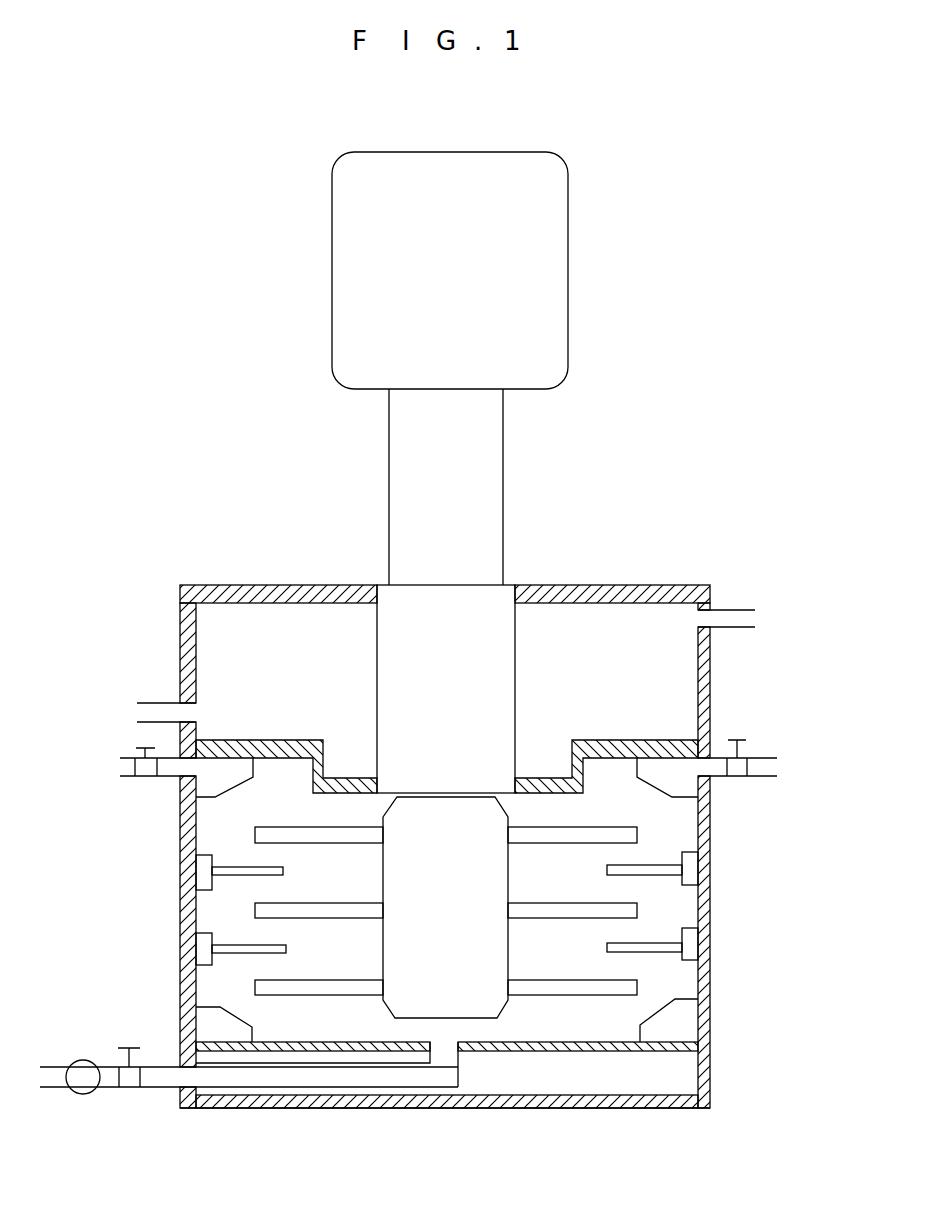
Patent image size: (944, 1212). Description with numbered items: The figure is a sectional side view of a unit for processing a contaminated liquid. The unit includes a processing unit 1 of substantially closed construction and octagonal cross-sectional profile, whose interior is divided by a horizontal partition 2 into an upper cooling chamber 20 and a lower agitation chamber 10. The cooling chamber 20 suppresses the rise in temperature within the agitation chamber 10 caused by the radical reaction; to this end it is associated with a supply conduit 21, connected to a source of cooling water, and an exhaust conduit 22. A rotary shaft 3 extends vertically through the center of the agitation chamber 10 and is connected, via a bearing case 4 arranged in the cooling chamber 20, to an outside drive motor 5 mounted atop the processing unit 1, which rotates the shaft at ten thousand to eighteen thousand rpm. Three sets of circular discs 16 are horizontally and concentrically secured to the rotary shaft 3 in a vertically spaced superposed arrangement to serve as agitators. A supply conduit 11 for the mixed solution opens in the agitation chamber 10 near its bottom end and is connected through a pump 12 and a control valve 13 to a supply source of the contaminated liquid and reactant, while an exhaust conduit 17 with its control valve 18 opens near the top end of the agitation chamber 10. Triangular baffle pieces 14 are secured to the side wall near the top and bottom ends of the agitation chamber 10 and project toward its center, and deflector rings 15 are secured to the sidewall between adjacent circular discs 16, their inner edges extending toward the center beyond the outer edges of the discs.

The processing unit 1 is at (157, 633).
The horizontal partition 2 is at (662, 740).
The rotary shaft 3 is at (490, 873).
The bearing case 4 is at (497, 672).
The drive motor 5 is at (545, 273).
The agitation chamber 10 is at (678, 830).
The supply conduit 11 is at (242, 1068).
The pump 12 is at (80, 1088).
The control valve 13 is at (128, 1082).
The baffle pieces 14 is at (218, 787).
The deflector rings 15 is at (231, 878).
The circular discs 16 is at (300, 835).
The exhaust conduit 17 is at (120, 770).
The control valve 18 is at (142, 781).
The cooling chamber 20 is at (600, 623).
The supply conduit 21 is at (160, 713).
The exhaust conduit 22 is at (730, 620).